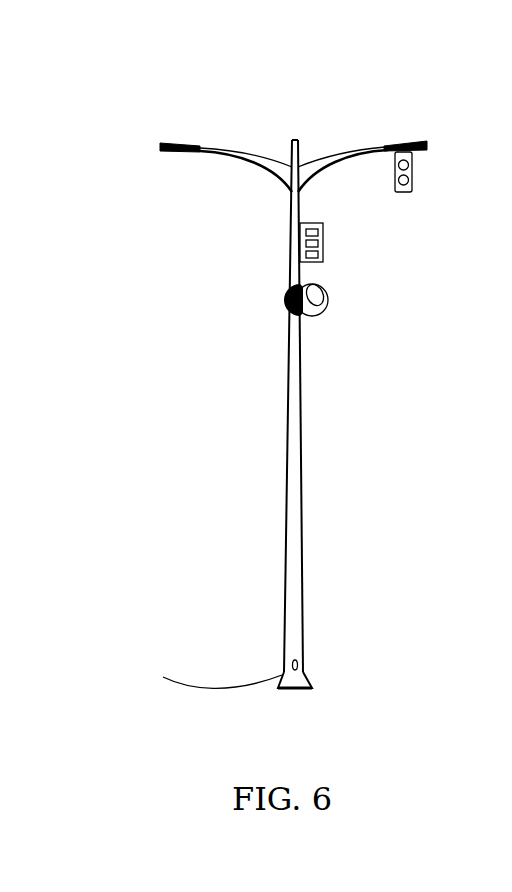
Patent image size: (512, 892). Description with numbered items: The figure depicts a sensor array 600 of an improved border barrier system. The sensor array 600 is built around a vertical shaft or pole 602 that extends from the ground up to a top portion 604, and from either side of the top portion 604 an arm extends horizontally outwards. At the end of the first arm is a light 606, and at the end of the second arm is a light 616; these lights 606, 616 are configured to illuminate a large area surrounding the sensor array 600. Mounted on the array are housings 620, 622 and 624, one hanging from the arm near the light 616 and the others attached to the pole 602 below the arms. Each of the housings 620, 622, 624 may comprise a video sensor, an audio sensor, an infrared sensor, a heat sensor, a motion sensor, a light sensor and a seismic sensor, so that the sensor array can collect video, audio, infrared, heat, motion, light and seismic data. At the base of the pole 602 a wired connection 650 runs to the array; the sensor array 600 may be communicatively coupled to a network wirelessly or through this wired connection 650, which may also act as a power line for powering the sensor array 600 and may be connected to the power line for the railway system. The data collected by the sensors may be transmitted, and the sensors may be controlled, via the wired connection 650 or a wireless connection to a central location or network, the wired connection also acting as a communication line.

The sensor array 600 is at (156, 83).
The pole 602 is at (308, 563).
The top portion 604 is at (300, 132).
The light 606 is at (170, 131).
The light 616 is at (422, 132).
The housing 620 is at (413, 178).
The housing 622 is at (325, 262).
The housing 624 is at (328, 320).
The wired connection 650 is at (177, 677).